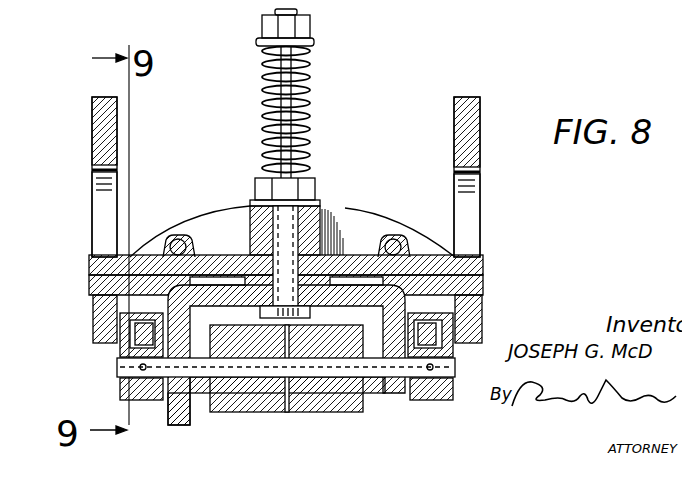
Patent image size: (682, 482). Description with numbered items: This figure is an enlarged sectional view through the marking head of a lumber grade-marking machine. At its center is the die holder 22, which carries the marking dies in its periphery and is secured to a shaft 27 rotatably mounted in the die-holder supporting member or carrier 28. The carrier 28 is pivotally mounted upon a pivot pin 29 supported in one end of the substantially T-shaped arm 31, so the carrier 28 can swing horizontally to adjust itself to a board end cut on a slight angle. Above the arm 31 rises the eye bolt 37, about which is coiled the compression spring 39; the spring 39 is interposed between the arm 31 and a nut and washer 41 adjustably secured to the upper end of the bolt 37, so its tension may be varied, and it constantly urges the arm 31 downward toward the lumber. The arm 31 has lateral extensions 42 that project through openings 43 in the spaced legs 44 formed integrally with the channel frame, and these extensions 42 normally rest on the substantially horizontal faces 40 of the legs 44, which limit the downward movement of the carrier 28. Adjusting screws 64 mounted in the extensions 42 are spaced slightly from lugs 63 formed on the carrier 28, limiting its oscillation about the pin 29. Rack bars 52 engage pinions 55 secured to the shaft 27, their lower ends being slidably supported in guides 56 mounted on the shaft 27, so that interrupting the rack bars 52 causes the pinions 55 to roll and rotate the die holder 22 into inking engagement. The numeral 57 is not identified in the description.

The die holder 22 is at (340, 395).
The shaft 27 is at (262, 362).
The die-holder supporting member or carrier 28 is at (180, 420).
The pivot pin 29 is at (290, 238).
The T-shaped arm 31 is at (352, 242).
The eye bolt 37 is at (304, 101).
The compression spring 39 is at (304, 60).
The substantially horizontal faces 40 is at (90, 292).
The nut and washer 41 is at (312, 36).
The lateral extensions 42 is at (90, 266).
The openings 43 is at (100, 217).
The legs 44 is at (98, 125).
The rack bars 52 is at (437, 328).
The pinions 55 is at (154, 398).
The guides 56 is at (95, 320).
The left bearing 57 is at (140, 332).
The lugs 63 is at (173, 238).
The adjusting screws 64 is at (180, 243).